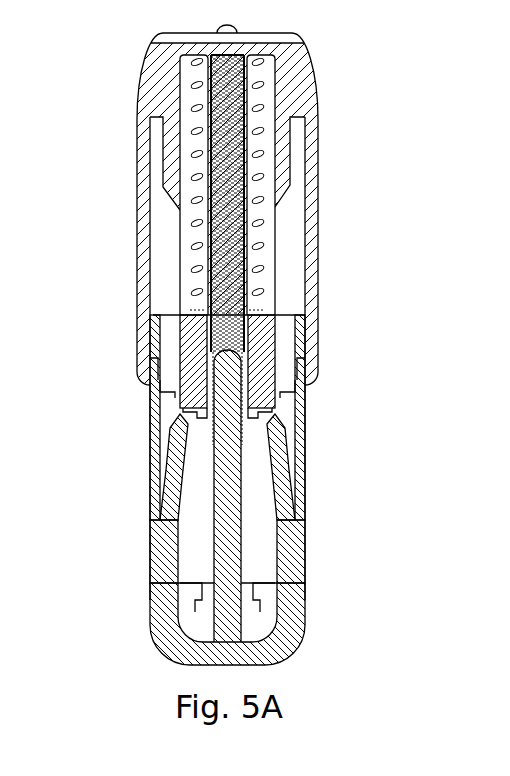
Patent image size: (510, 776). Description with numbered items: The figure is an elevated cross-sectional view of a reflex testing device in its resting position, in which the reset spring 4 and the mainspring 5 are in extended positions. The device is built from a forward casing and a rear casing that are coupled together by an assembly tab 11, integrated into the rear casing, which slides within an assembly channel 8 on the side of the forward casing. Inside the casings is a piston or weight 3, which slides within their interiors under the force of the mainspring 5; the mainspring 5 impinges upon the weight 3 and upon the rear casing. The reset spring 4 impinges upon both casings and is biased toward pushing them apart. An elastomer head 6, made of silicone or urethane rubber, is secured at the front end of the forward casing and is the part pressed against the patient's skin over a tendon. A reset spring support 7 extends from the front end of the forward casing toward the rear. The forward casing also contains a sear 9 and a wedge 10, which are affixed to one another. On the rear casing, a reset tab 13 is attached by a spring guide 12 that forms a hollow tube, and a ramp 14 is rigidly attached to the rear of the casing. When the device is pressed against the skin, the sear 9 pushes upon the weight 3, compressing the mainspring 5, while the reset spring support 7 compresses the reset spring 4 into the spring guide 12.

The weight 3 is at (179, 352).
The reset spring 4 is at (248, 226).
The mainspring 5 is at (197, 227).
The elastomer head 6 is at (284, 636).
The reset spring support 7 is at (242, 512).
The assembly channel 8 is at (155, 568).
The sear 9 is at (173, 415).
The wedge 10 is at (284, 392).
The assembly tab 11 is at (302, 367).
The spring guide 12 is at (244, 270).
The reset tab 13 is at (280, 422).
The ramp 14 is at (168, 158).